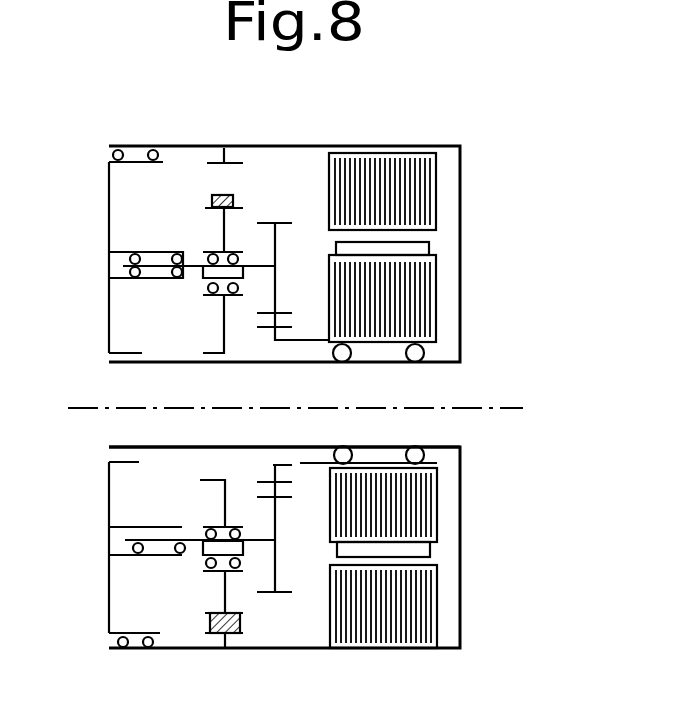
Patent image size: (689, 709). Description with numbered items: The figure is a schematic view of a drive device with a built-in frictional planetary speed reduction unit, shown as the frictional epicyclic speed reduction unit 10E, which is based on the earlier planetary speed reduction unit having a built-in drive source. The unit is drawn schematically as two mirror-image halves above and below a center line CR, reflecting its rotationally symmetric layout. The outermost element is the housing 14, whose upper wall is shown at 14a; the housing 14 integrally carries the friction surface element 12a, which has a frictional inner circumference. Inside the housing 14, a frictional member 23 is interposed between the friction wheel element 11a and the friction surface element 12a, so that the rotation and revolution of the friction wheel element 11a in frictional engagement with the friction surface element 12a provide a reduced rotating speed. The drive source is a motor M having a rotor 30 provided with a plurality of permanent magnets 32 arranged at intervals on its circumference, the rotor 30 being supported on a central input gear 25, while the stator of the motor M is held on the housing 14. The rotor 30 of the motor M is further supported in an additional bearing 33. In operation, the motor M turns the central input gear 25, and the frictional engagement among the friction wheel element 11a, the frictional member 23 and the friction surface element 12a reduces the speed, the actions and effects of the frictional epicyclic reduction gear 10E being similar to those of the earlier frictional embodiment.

The frictional epicyclic speed reduction unit 10E is at (97, 296).
The friction surface element 12a is at (217, 164).
The frictional member 23 is at (233, 196).
The friction wheel element 11a is at (225, 233).
The motor M is at (444, 250).
The additional bearing 33 is at (417, 353).
The center line CR is at (462, 407).
The housing 14 is at (460, 635).
The top plate of housing 14a is at (442, 447).
The central input gear 25 is at (300, 462).
The rotor 30 is at (428, 497).
The permanent magnets 32 is at (422, 548).